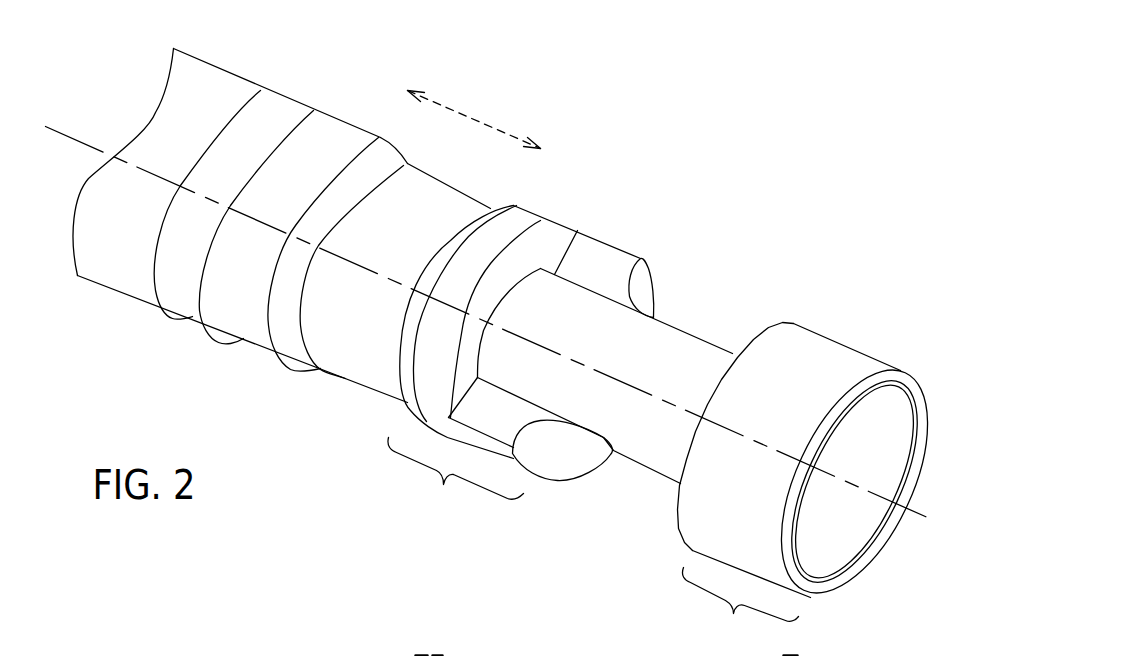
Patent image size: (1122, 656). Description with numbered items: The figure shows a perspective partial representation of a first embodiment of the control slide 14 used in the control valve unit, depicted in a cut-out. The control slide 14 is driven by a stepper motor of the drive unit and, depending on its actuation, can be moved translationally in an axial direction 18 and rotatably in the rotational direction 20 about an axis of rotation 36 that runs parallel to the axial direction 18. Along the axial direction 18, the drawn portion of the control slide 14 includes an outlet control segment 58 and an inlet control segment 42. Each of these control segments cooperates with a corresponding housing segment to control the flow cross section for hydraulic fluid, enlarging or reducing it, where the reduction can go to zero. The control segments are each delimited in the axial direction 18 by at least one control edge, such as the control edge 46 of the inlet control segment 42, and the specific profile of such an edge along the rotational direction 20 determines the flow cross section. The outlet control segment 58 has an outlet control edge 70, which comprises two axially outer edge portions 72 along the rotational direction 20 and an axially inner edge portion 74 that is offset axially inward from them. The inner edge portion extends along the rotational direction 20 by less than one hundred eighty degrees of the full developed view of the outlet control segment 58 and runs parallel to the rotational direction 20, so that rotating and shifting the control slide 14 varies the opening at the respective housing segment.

The control slide 14 is at (684, 163).
The axial direction 18 is at (498, 112).
The rotational direction 20 is at (205, 18).
The axis of rotation 36 is at (58, 145).
The inlet control segment 42 is at (789, 484).
The control edge 46 is at (755, 322).
The outlet control segment 58 is at (456, 479).
The outlet control edge 70 is at (541, 222).
The axially outer edge portion 72 is at (505, 253).
The axially inner edge portion 74 is at (653, 300).